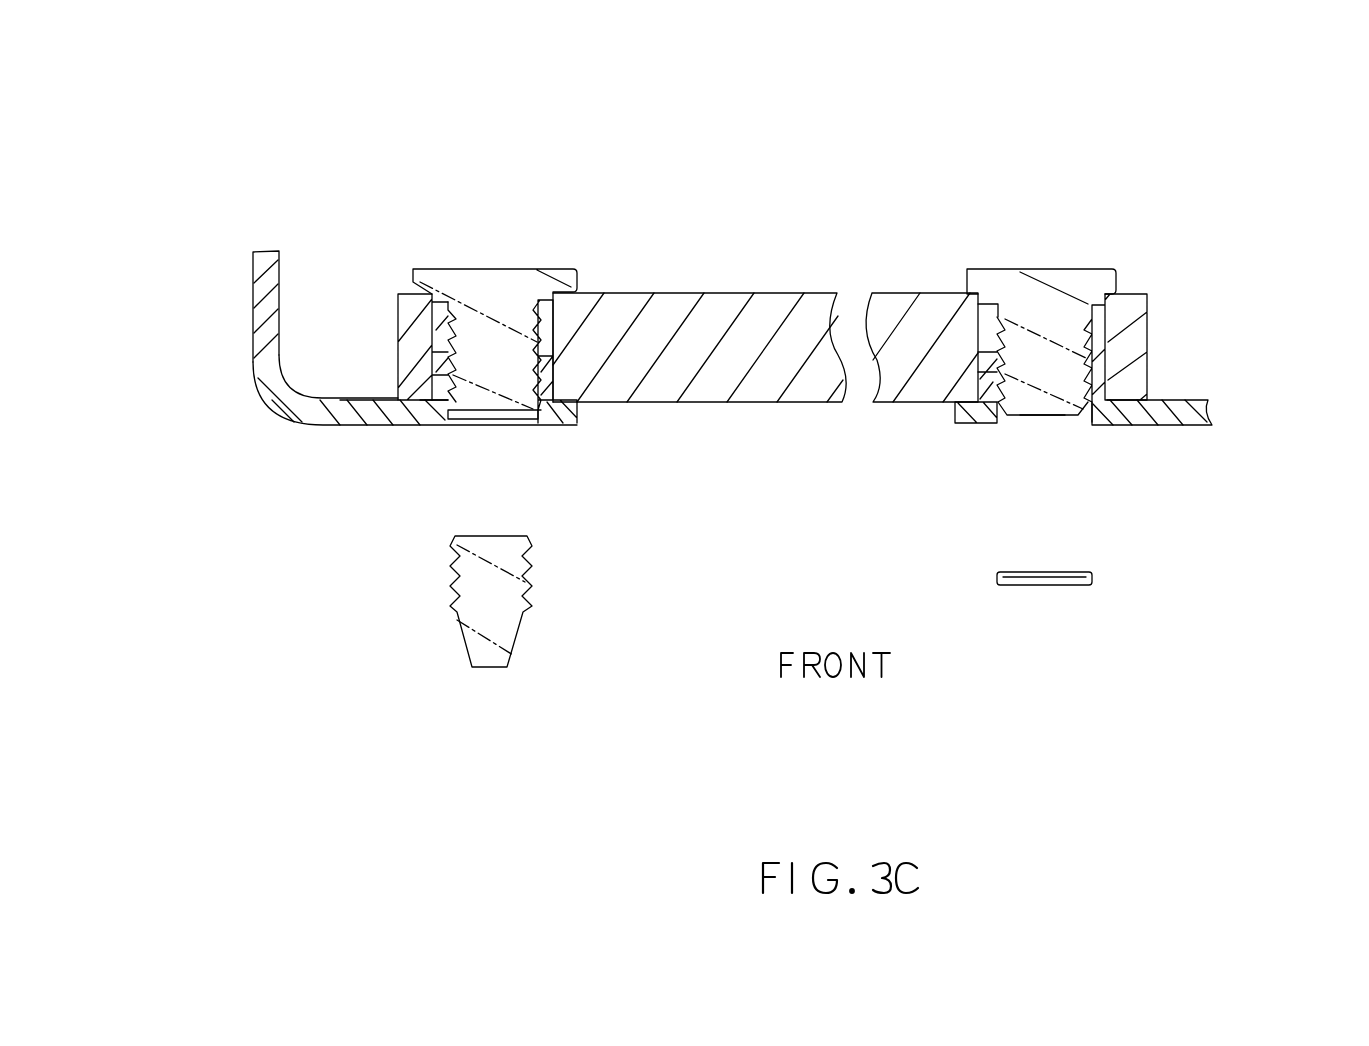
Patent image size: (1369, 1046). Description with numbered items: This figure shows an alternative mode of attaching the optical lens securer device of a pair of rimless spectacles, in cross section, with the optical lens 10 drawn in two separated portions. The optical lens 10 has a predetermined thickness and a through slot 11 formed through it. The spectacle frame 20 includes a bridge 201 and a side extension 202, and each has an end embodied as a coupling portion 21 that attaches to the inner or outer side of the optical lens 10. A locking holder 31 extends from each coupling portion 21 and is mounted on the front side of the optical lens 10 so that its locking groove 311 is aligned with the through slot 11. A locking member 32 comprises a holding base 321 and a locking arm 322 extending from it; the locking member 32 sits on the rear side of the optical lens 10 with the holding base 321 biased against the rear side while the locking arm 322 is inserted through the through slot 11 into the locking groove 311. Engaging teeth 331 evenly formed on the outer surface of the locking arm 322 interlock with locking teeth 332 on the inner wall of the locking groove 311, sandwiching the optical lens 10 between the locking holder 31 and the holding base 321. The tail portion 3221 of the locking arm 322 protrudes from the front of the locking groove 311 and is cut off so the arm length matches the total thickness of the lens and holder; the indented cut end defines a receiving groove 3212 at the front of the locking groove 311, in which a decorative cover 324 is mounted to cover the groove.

The optical lens 10 is at (763, 383).
The through slot 11 is at (560, 317).
The spectacle frame 20 is at (168, 304).
The bridge 201 is at (1215, 413).
The side extension 202 is at (253, 292).
The coupling portion 21 is at (290, 435).
The locking holder 31 is at (577, 413).
The locking groove 311 is at (548, 414).
The locking member 32 is at (500, 121).
The holding base 321 is at (430, 278).
The locking arm 322 is at (493, 343).
The receiving groove 3212 is at (1042, 425).
The tail portion 3221 is at (545, 536).
The decorative cover 324 is at (493, 420).
The engaging teeth 331 is at (430, 400).
The locking teeth 332 is at (360, 400).